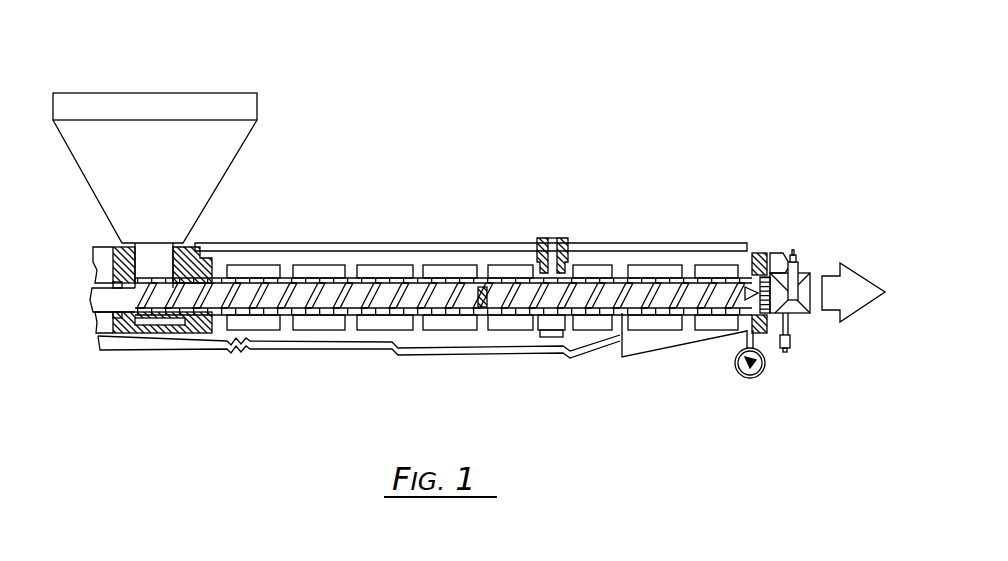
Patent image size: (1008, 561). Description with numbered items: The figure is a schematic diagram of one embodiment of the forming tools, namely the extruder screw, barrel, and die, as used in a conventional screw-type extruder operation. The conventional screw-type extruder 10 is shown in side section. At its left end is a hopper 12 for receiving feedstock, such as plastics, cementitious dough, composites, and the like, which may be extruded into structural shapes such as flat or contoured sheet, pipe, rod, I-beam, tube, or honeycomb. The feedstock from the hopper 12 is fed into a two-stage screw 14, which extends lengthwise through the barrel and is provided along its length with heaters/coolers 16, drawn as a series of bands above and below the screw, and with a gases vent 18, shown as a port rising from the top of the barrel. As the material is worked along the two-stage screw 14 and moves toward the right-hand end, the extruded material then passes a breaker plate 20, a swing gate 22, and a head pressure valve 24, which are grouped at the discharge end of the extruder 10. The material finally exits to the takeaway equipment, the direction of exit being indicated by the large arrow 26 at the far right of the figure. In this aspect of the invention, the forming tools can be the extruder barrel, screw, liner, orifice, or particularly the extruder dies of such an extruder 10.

The screw-type extruder 10 is at (488, 167).
The hopper 12 is at (257, 104).
The two-stage screw 14 is at (482, 307).
The heaters/coolers 16 is at (383, 264).
The gases vent 18 is at (552, 237).
The breaker plate 20 is at (756, 251).
The swing gate 22 is at (773, 335).
The head pressure valve 24 is at (795, 260).
The arrow 26 is at (850, 268).